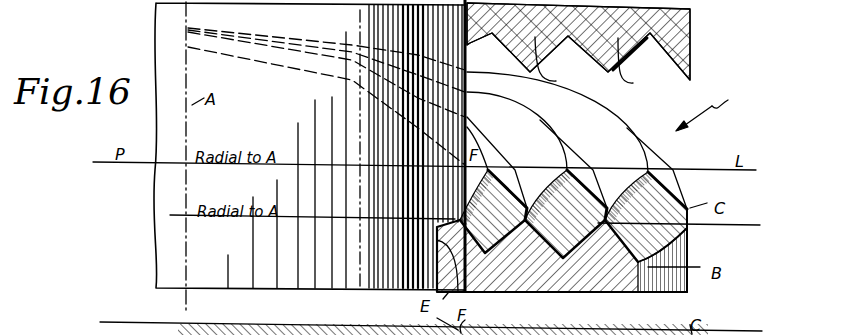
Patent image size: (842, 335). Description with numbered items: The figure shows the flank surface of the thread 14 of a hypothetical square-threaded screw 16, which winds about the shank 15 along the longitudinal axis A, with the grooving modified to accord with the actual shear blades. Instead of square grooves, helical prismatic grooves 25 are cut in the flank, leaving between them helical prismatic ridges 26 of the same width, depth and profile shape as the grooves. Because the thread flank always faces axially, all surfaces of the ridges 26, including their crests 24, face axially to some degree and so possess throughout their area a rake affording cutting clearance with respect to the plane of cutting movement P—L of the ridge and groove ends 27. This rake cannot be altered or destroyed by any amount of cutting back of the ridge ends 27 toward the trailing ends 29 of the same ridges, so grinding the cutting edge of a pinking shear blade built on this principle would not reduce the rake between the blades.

The thread 14 is at (673, 249).
The shank 15 is at (309, 145).
The hypothetical screw 16 is at (709, 105).
The crest 24 is at (597, 197).
The helical prismatic groove 25 is at (637, 44).
The helical prismatic ridge 26 is at (533, 310).
The ridge and groove end 27 is at (674, 192).
The trailing end 29 is at (643, 262).